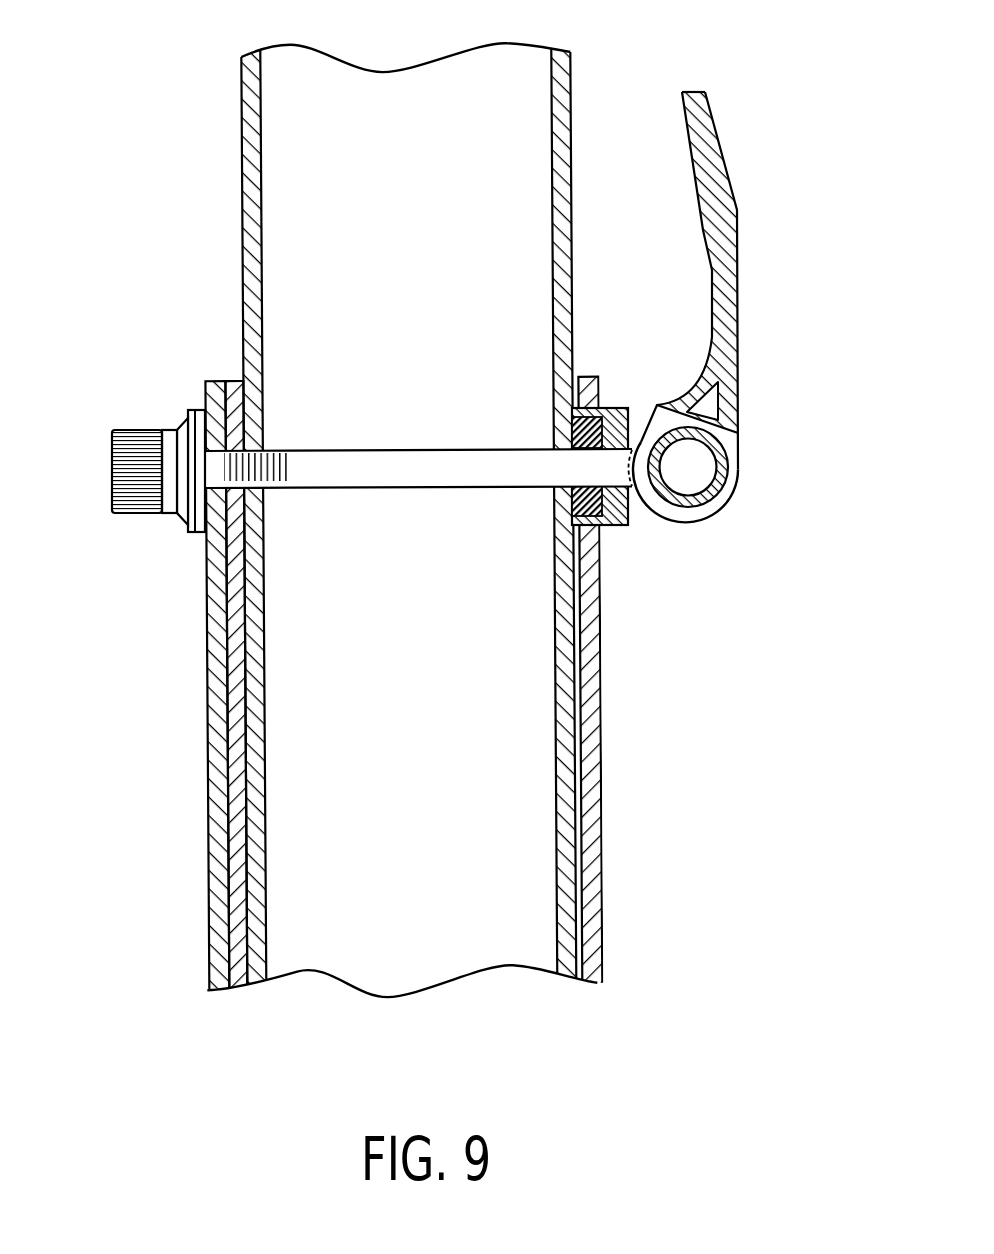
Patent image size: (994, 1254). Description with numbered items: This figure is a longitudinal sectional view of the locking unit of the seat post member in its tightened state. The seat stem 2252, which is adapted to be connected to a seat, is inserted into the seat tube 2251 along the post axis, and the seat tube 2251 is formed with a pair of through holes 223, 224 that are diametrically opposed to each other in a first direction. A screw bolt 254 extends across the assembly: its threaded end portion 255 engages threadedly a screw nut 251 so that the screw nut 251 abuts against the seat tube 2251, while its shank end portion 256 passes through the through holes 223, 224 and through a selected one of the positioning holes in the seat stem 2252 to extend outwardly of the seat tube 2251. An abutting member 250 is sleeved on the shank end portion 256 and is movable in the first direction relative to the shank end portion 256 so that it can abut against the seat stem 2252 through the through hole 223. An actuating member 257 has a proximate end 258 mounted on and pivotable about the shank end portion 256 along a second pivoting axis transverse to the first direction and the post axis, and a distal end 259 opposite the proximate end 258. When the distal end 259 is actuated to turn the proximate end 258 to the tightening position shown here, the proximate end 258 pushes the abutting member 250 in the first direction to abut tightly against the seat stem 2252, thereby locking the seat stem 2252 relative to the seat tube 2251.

The screw nut 251 is at (128, 430).
The screw bolt 254 is at (388, 476).
The threaded end portion 255 is at (275, 440).
The shank end portion 256 is at (485, 483).
The through hole 224 is at (240, 487).
The through hole 223 is at (573, 417).
The abutting member 250 is at (612, 400).
The actuating member 257 is at (754, 265).
The proximate end 258 is at (739, 477).
The distal end 259 is at (706, 96).
The seat tube 2251 is at (606, 789).
The seat stem 2252 is at (236, 251).